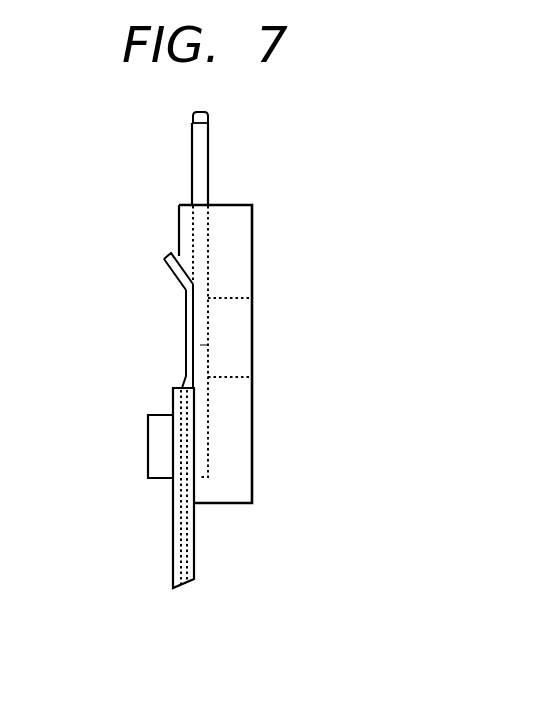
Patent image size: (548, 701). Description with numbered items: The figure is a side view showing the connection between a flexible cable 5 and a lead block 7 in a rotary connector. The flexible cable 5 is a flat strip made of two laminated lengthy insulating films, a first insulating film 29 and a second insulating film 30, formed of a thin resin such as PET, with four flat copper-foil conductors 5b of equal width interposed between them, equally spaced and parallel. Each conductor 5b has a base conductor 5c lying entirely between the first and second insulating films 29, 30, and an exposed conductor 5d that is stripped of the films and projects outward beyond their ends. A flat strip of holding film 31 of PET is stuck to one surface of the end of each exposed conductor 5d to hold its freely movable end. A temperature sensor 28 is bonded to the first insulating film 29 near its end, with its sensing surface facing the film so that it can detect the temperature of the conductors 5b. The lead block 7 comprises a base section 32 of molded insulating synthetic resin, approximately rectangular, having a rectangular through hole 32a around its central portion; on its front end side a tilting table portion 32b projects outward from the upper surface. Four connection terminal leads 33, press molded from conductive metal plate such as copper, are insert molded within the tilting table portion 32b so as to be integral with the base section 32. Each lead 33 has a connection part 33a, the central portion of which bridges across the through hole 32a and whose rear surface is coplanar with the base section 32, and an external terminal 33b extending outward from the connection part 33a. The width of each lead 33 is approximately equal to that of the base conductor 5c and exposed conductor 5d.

The lead block 7 is at (255, 455).
The base section 32 is at (243, 407).
The through hole 32a is at (241, 318).
The tilting table portion 32b is at (182, 233).
The connection terminal lead 33 is at (213, 133).
The connection part 33a is at (197, 345).
The external terminal 33b is at (197, 143).
The holding film 31 is at (164, 275).
The exposed conductor 5d is at (185, 340).
The flexible cable 5 is at (173, 500).
The conductor 5b is at (200, 560).
The base conductor 5c is at (180, 592).
The temperature sensor 28 is at (156, 460).
The first insulating film 29 is at (173, 557).
The second insulating film 30 is at (197, 525).